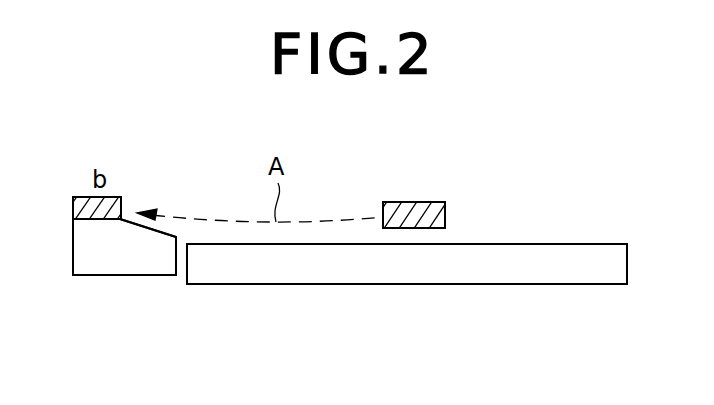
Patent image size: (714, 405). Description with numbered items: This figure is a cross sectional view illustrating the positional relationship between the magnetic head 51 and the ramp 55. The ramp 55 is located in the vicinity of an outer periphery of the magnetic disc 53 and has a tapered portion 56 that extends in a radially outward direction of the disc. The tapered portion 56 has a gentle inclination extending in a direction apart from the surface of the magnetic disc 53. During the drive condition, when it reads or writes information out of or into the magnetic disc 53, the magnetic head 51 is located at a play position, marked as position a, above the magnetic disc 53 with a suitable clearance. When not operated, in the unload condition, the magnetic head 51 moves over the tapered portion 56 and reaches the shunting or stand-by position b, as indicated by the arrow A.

The magnetic head 51 is at (446, 213).
The magnetic disc 53 is at (403, 284).
The ramp 55 is at (110, 275).
The tapered portion 56 is at (158, 230).